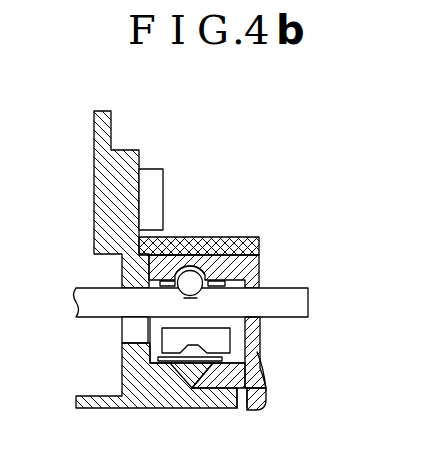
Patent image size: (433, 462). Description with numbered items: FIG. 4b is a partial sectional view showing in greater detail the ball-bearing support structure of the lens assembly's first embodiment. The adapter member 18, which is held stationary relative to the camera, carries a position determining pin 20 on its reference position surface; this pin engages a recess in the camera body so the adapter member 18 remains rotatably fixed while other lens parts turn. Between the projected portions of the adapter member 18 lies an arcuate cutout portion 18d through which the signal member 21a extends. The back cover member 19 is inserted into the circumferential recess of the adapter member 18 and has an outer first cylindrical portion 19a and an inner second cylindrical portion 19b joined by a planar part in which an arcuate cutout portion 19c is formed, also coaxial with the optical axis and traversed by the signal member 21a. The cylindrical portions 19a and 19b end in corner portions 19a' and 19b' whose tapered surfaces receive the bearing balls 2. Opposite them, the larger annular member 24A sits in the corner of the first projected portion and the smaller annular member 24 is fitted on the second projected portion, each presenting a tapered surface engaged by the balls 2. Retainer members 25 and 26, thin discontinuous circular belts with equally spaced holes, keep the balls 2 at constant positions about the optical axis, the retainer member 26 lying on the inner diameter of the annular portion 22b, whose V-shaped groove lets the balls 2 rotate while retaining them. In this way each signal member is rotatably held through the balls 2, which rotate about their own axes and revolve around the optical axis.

The bearing balls 2 is at (172, 278).
The adapter member 18 is at (243, 248).
The arcuate cutout portion 18d is at (128, 333).
The back cover member 19 is at (256, 267).
The first cylindrical portion 19a is at (223, 234).
The corner portion 19a' is at (213, 221).
The second cylindrical portion 19b is at (266, 421).
The corner portion 19b' is at (217, 408).
The arcuate cutout portion 19c is at (256, 344).
The position determining pin 20 is at (153, 185).
The signal member 21a is at (295, 304).
The annular portion 22b is at (260, 382).
The annular member 24 is at (160, 391).
The annular member 24A is at (170, 243).
The retainer member 25 is at (216, 284).
The retainer member 26 is at (240, 406).